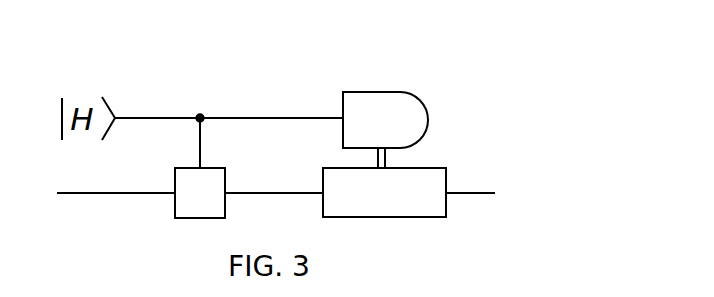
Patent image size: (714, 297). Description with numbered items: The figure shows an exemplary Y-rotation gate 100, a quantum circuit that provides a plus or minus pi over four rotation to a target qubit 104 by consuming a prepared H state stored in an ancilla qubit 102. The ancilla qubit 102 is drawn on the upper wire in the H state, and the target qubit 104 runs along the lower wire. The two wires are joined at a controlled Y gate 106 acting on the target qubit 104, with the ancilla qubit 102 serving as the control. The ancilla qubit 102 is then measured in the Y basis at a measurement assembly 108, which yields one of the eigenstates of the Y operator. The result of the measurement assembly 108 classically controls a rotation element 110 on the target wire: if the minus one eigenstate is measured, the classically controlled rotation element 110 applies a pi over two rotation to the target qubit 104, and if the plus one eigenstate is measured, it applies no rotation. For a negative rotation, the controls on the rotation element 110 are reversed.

The Y-rotation gate 100 is at (493, 49).
The ancilla qubit 102 is at (118, 117).
The target qubit 104 is at (102, 192).
The controlled Y gate 106 is at (202, 148).
The measurement assembly 108 is at (393, 92).
The classically controlled rotation element 110 is at (418, 167).